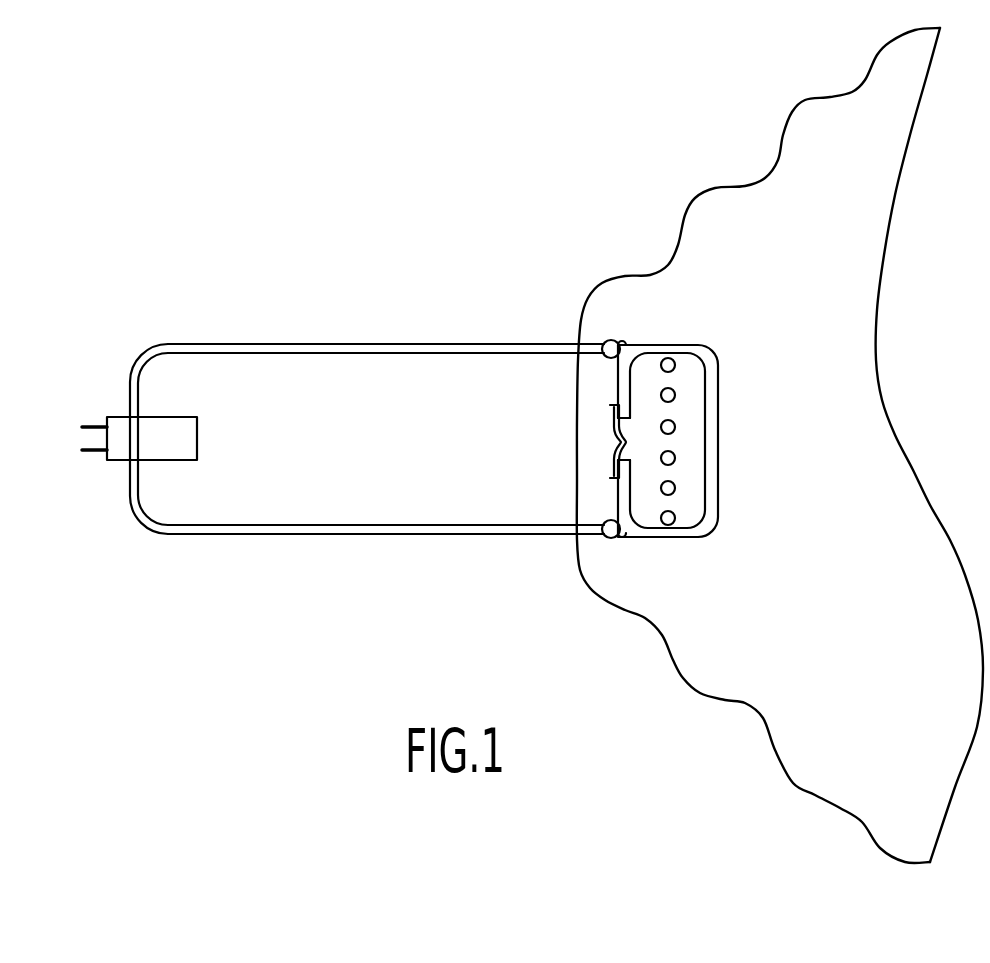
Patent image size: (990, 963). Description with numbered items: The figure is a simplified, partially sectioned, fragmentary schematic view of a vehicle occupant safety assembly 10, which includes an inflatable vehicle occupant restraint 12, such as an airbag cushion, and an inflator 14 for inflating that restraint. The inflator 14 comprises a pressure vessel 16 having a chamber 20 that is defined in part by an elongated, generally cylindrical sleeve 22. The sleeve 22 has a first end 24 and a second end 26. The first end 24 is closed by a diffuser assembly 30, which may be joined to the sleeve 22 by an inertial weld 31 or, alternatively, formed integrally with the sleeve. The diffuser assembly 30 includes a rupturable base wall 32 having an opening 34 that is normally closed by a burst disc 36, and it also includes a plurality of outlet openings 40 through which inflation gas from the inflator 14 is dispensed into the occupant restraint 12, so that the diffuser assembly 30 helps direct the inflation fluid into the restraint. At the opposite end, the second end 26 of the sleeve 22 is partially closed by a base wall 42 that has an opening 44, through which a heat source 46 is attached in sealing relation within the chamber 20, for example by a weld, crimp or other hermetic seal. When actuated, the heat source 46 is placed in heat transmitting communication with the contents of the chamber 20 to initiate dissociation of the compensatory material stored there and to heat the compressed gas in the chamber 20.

The vehicle occupant safety assembly 10 is at (398, 252).
The inflatable vehicle occupant restraint 12 is at (622, 278).
The inflator 14 is at (225, 335).
The pressure vessel 16 is at (284, 535).
The chamber 20 is at (348, 375).
The sleeve 22 is at (460, 345).
The first end 24 is at (615, 560).
The second end 26 is at (139, 326).
The diffuser assembly 30 is at (722, 338).
The inertial weld 31 is at (632, 332).
The rupturable base wall 32 is at (636, 493).
The opening 34 is at (637, 455).
The burst disc 36 is at (613, 437).
The outlet openings 40 is at (674, 398).
The base wall 42 is at (130, 403).
The opening 44 is at (128, 485).
The heat source 46 is at (187, 428).